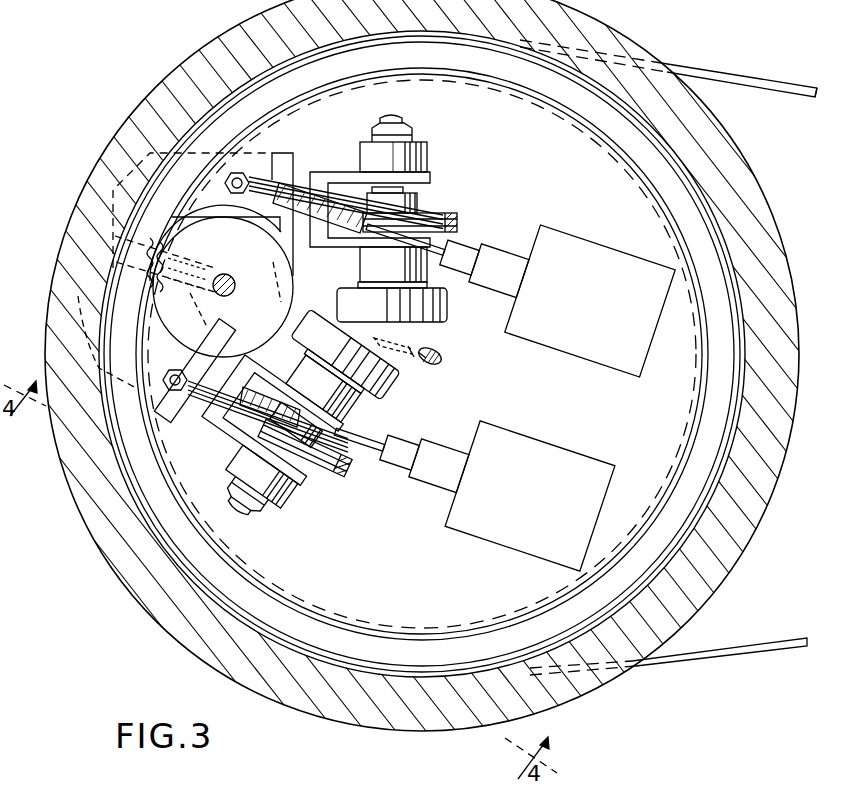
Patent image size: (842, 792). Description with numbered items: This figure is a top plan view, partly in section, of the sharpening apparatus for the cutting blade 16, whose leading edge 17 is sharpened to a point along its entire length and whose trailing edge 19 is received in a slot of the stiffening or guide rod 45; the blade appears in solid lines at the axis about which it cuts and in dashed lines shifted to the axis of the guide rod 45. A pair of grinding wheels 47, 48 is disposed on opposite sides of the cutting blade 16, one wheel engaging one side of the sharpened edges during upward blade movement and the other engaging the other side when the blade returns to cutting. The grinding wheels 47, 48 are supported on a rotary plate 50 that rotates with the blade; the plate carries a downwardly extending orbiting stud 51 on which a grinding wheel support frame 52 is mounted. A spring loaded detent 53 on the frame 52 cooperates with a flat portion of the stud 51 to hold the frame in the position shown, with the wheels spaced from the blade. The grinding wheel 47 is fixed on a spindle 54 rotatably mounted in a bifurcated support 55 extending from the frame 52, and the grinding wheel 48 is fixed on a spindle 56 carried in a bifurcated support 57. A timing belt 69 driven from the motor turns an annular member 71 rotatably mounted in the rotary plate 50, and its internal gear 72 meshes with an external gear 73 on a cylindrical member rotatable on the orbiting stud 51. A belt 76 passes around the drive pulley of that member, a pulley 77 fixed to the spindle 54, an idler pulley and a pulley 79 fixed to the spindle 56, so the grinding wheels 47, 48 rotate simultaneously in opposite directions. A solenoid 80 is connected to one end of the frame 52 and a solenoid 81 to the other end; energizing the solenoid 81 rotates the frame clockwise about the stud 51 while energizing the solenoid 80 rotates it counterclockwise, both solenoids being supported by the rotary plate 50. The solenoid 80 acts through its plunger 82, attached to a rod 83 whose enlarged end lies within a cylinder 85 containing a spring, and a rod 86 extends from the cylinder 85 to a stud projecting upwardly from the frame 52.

The cutting blade 16 is at (412, 358).
The leading edge 17 is at (390, 340).
The trailing edge 19 is at (440, 364).
The stiffening or guide rod 45 is at (441, 354).
The grinding wheel 47 is at (374, 318).
The grinding wheel 48 is at (333, 371).
The rotary plate 50 is at (618, 677).
The orbiting stud 51 is at (237, 284).
The grinding wheel support frame 52 is at (285, 153).
The spring loaded detent 53 is at (199, 310).
The spindle 54 is at (401, 118).
The bifurcated support 55 is at (436, 181).
The spindle 56 is at (244, 499).
The bifurcated support 57 is at (264, 432).
The timing belt 69 is at (750, 646).
The annular member 71 is at (653, 549).
The internal gear 72 is at (147, 300).
The external gear 73 is at (247, 188).
The belt 76 is at (340, 470).
The pulley 77 is at (450, 212).
The pulley 79 is at (333, 478).
The solenoid 80 is at (534, 505).
The solenoid 81 is at (592, 315).
The plunger 82 is at (400, 480).
The rod 83 is at (355, 433).
The cylinder 85 is at (224, 410).
The rod 86 is at (188, 368).